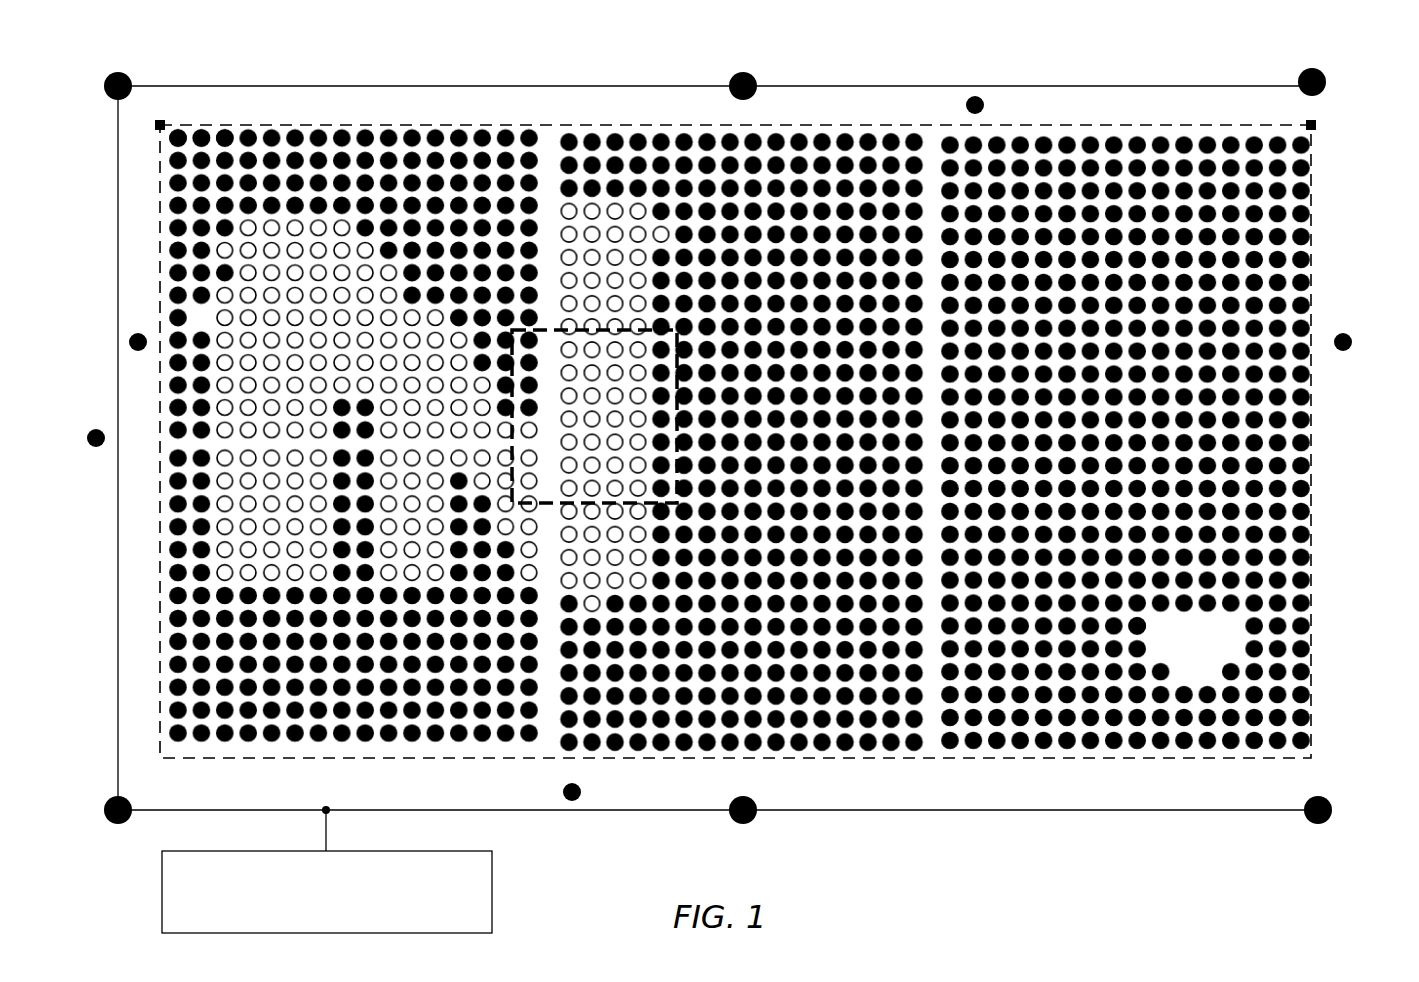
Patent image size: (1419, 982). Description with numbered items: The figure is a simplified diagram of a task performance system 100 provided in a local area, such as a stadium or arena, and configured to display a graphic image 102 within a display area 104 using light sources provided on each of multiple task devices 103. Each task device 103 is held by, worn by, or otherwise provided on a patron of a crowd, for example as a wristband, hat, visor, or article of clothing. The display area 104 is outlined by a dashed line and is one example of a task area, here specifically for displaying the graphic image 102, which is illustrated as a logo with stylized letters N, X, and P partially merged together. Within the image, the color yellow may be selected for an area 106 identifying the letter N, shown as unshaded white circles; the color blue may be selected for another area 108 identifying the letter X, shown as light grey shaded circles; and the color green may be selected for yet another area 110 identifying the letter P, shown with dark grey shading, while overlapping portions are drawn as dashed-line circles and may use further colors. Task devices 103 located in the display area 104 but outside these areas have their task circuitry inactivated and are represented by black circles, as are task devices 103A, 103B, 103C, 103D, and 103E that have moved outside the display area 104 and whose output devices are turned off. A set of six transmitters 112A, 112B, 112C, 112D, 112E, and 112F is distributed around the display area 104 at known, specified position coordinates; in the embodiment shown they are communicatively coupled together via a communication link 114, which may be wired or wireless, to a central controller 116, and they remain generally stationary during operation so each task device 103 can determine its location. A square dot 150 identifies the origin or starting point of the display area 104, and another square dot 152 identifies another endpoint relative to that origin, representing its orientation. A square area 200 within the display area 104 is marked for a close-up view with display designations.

The task performance system 100 is at (1114, 850).
The graphic image 102 is at (1162, 634).
The task devices 103 is at (225, 128).
The task device 103A is at (137, 333).
The task device 103B is at (966, 104).
The task device 103C is at (1342, 333).
The task device 103D is at (563, 791).
The task device 103E is at (97, 429).
The display area 104 is at (1318, 432).
The area 106 is at (291, 441).
The area 108 is at (795, 436).
The area 110 is at (1191, 485).
The transmitter 112A is at (1305, 822).
The transmitter 112B is at (736, 820).
The transmitter 112C is at (112, 826).
The transmitter 112D is at (130, 78).
The transmitter 112E is at (752, 78).
The transmitter 112F is at (1300, 76).
The communication link 114 is at (450, 86).
The central controller 116 is at (311, 915).
The square dot 150 is at (155, 126).
The square dot 152 is at (1318, 127).
The square area 200 is at (546, 328).